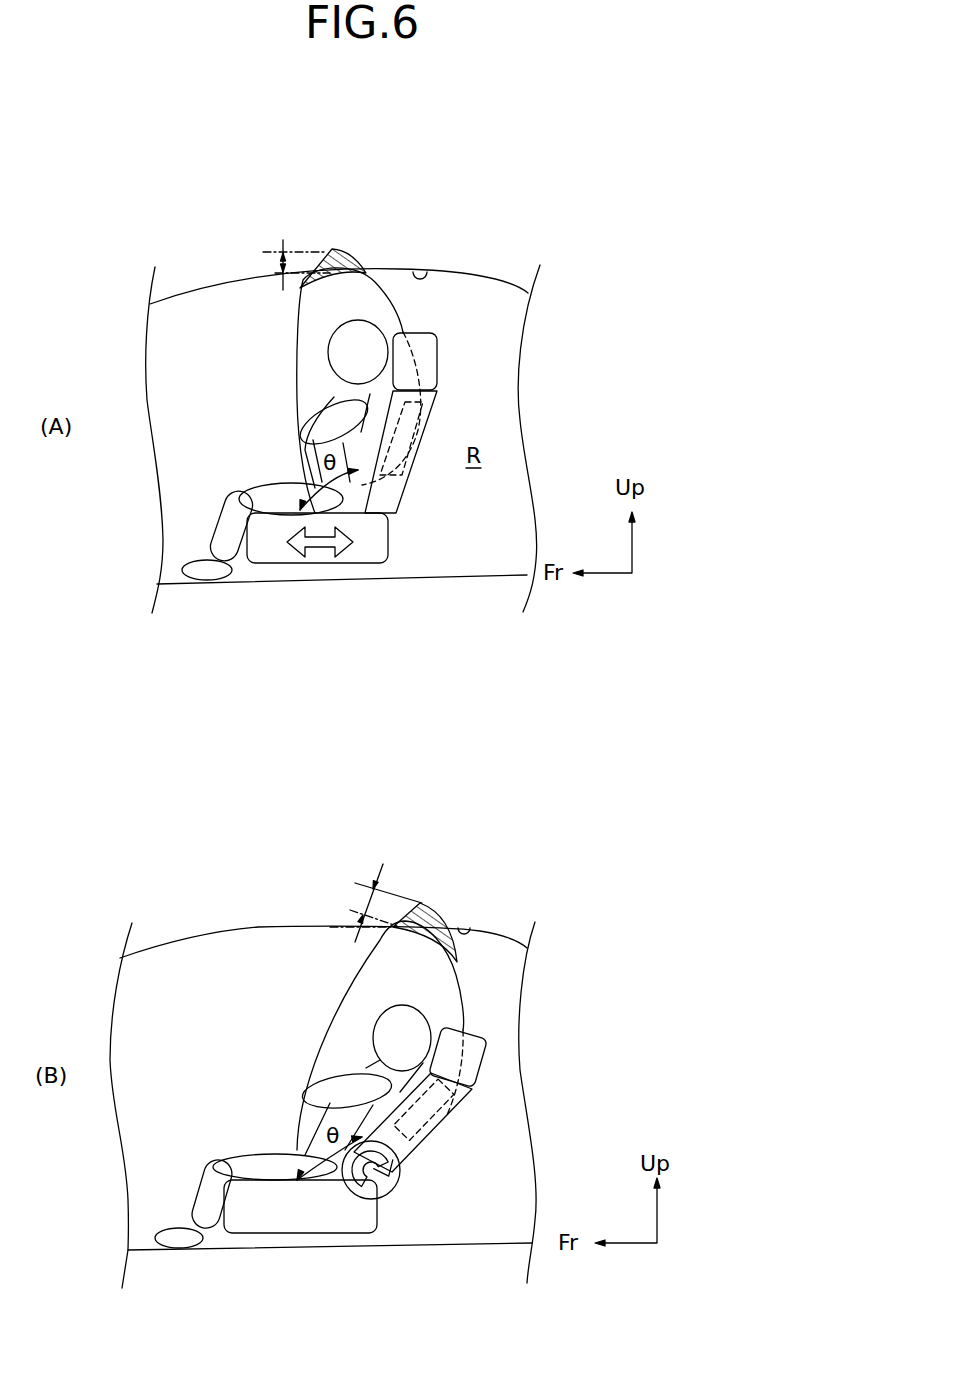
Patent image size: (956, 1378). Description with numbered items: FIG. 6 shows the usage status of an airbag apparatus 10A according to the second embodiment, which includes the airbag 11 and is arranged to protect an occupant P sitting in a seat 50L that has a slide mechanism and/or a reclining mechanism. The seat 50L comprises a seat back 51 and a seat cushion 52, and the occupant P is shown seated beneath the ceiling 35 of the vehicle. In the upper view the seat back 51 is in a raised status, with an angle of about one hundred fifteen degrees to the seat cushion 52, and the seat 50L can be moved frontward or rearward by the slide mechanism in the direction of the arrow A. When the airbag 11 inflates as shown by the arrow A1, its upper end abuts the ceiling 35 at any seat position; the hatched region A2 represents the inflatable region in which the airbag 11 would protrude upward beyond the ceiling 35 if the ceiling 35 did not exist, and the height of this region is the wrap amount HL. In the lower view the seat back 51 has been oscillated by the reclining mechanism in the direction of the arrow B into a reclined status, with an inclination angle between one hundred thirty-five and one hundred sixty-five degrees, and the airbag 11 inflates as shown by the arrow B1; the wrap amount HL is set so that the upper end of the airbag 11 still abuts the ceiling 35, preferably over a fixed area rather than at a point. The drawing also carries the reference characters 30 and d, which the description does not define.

The airbag 11 is at (288, 340).
The roof 30 is at (484, 273).
The ceiling 35 is at (423, 270).
The airbag apparatus 10A is at (497, 321).
The seat 50L is at (358, 826).
The seat back 51 is at (398, 480).
The seat cushion 52 is at (263, 555).
The occupant P is at (303, 433).
The arrow A1 is at (297, 383).
The inflatable region A2 is at (348, 262).
The arrow B1 is at (464, 998).
The arrow A is at (320, 548).
The arrow B is at (387, 1182).
The wrap amount HL is at (332, 581).
The interference distance d is at (323, 252).